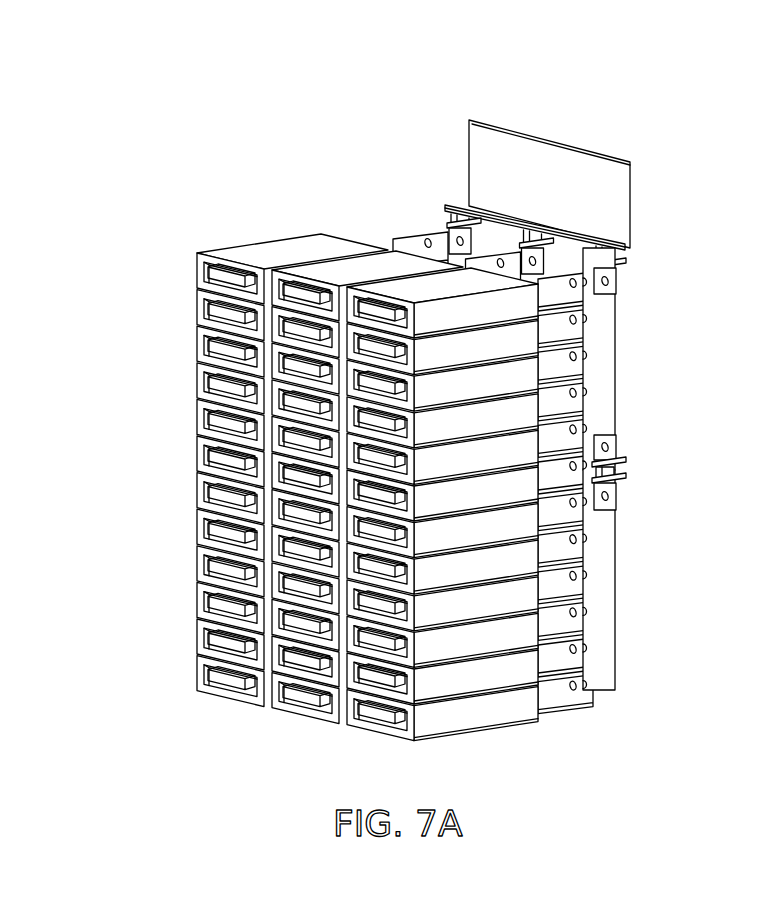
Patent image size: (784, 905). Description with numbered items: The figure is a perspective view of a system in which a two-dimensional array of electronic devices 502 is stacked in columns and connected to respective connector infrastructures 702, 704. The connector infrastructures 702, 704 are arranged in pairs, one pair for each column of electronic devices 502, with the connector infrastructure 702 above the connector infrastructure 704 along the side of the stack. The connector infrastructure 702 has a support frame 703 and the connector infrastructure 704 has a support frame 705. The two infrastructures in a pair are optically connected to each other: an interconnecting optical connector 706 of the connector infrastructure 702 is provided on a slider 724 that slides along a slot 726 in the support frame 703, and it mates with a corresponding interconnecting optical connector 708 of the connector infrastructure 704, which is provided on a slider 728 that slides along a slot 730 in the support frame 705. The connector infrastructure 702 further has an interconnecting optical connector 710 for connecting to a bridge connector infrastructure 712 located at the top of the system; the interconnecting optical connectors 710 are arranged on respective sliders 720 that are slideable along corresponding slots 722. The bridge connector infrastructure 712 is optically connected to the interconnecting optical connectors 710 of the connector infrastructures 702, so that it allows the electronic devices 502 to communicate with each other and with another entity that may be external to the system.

The electronic devices 502 is at (375, 744).
The connector infrastructure 702 is at (675, 359).
The support frame 703 is at (612, 380).
The connector infrastructure 704 is at (671, 580).
The support frame 705 is at (606, 640).
The interconnecting optical connector 706 is at (622, 464).
The interconnecting optical connector 708 is at (620, 474).
The interconnecting optical connector 710 is at (526, 236).
The bridge connector infrastructure 712 is at (612, 172).
The slider 720 is at (618, 284).
The slot 722 is at (604, 293).
The slider 724 is at (612, 446).
The slot 726 is at (600, 434).
The slider 728 is at (612, 494).
The slot 730 is at (605, 508).